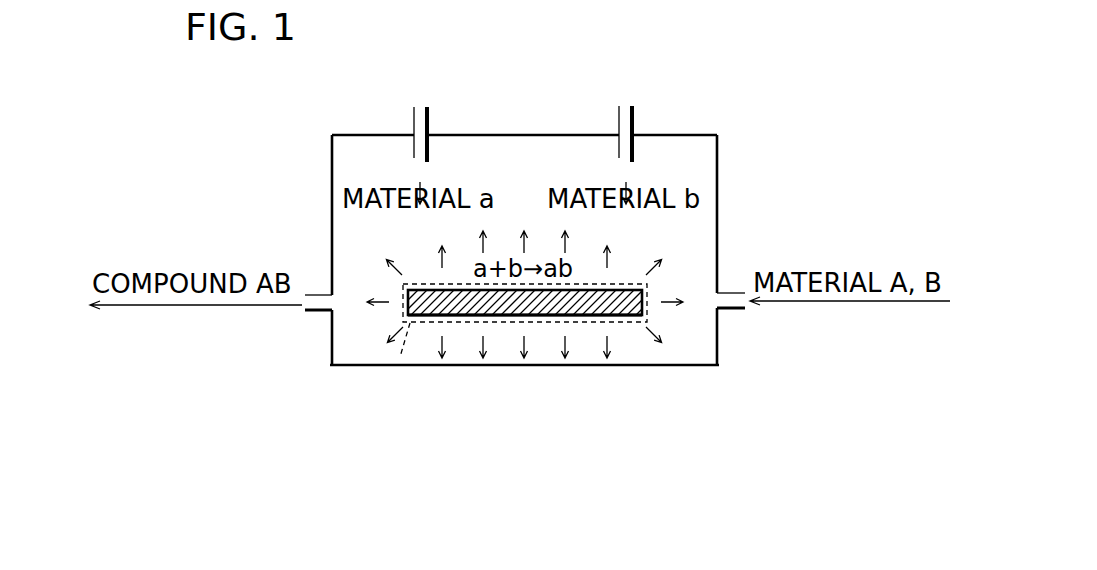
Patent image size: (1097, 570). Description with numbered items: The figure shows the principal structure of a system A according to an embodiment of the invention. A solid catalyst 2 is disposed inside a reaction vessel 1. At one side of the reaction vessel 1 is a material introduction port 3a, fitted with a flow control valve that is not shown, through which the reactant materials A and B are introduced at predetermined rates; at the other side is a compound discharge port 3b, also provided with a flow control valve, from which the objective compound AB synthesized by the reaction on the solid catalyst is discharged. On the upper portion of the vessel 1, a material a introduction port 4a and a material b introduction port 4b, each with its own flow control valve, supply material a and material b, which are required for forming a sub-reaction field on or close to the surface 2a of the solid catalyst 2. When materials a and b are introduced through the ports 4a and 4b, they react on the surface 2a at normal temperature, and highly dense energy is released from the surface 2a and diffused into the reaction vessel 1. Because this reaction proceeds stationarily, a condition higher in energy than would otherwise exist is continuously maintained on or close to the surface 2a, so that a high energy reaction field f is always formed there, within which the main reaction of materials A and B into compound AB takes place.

The reaction vessel 1 is at (360, 365).
The solid catalyst 2 is at (620, 318).
The surface of the solid catalyst 2a is at (630, 285).
The material introduction port 3a is at (733, 311).
The compound discharge port 3b is at (315, 313).
The material a introduction port 4a is at (429, 118).
The material b introduction port 4b is at (634, 117).
The high energy reaction field f is at (401, 360).
The system A is at (757, 151).